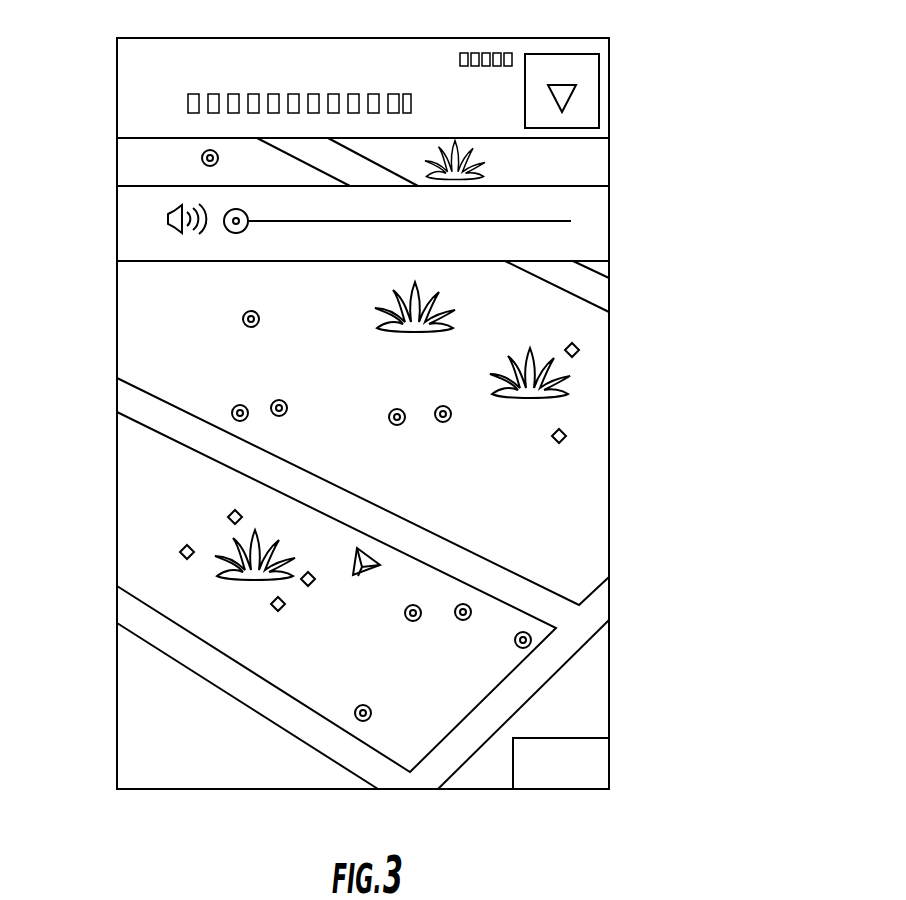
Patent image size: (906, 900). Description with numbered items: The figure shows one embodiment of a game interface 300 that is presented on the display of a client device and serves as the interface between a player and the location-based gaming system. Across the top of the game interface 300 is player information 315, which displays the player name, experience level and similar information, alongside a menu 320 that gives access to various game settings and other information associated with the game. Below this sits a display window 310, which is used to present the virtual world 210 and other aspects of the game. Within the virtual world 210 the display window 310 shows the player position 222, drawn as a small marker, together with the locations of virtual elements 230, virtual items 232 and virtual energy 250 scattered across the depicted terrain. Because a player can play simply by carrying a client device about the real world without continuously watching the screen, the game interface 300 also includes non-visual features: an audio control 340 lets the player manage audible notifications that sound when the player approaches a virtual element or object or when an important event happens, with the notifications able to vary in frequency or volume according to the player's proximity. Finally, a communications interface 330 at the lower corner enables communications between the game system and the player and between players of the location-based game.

The game interface 300 is at (698, 127).
The player information 315 is at (128, 57).
The menu 320 is at (590, 90).
The display window 310 is at (600, 167).
The audio control 340 is at (128, 204).
The virtual world 210 is at (600, 497).
The communications interface 330 is at (605, 768).
The virtual elements 230 is at (384, 309).
The virtual items 232 is at (228, 516).
The virtual energy 250 is at (258, 324).
The player position 222 is at (353, 575).